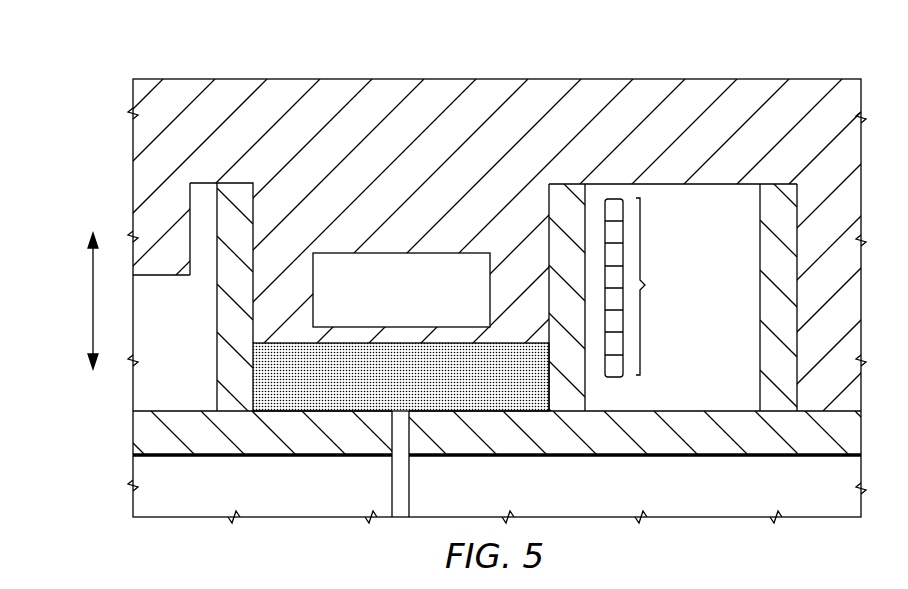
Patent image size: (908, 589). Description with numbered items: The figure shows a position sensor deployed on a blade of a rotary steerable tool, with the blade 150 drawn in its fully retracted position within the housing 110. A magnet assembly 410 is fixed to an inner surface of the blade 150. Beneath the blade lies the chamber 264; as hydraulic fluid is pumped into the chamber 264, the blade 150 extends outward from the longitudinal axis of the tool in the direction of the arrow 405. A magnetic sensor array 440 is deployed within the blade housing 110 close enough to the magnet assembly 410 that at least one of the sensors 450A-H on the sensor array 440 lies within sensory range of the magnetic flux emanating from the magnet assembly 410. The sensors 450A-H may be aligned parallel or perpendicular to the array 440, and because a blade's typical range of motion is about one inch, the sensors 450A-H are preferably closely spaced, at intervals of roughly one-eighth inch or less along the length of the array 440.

The blade 150 is at (276, 79).
The housing 110 is at (182, 409).
The arrow 405 is at (92, 300).
The magnet assembly 410 is at (403, 252).
The chamber 264 is at (426, 388).
The magnetic sensor array 440 is at (618, 384).
The sensors 450A-H is at (670, 286).